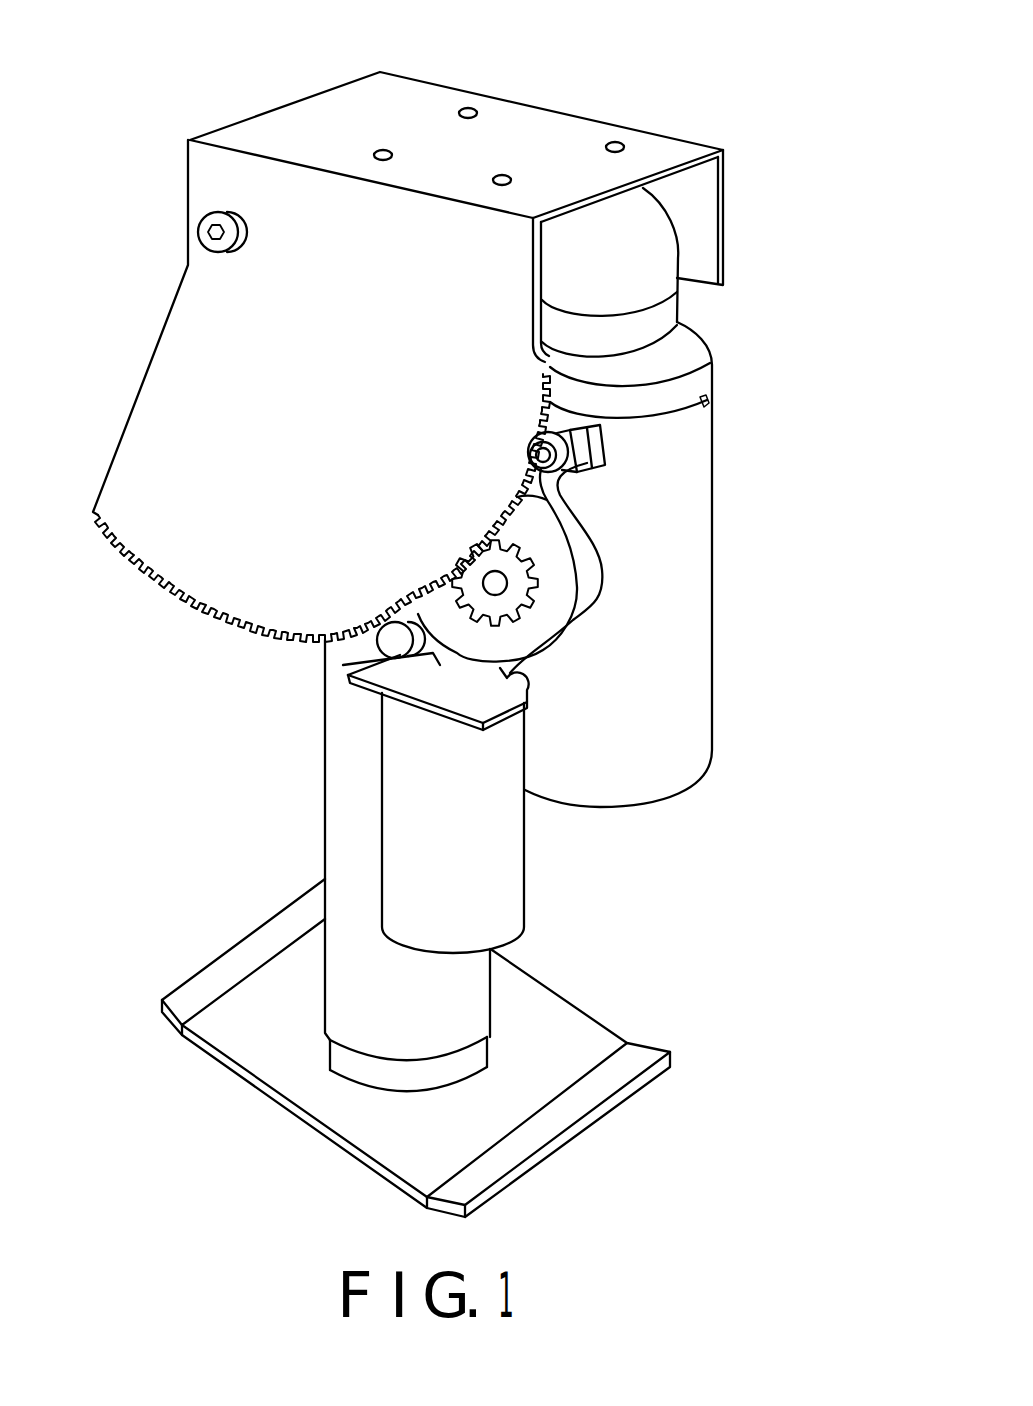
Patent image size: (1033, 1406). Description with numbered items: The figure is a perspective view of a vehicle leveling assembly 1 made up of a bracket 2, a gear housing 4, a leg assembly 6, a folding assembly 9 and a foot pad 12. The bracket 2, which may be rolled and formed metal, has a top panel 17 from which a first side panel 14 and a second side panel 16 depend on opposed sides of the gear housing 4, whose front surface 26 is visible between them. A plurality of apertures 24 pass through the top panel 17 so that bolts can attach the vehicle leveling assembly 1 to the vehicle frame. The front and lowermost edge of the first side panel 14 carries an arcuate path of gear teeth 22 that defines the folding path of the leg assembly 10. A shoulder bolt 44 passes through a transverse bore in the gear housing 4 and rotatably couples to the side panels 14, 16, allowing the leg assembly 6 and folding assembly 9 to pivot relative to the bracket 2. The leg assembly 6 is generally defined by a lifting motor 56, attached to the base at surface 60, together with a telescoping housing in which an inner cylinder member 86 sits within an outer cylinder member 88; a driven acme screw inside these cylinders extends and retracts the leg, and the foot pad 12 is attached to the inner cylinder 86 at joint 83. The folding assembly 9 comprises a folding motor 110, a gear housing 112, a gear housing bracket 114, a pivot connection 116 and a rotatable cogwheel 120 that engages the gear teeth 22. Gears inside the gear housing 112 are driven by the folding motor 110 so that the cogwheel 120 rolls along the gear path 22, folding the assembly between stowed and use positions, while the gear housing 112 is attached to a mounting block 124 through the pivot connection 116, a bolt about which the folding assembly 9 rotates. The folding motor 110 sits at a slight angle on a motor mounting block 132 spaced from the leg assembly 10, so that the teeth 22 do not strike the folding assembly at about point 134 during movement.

The vehicle leveling assembly 1 is at (876, 168).
The bracket 2 is at (588, 68).
The gear housing 4 is at (645, 253).
The leg assembly 6 is at (214, 771).
The folding assembly 9 is at (566, 829).
The leg assembly 10 is at (287, 880).
The foot pad 12 is at (597, 1017).
The first side panel 14 is at (176, 348).
The second side panel 16 is at (727, 178).
The top panel 17 is at (318, 115).
The path of gear teeth 22 is at (160, 585).
The apertures 24 is at (388, 151).
The front surface 26 is at (655, 318).
The shoulder bolt 44 is at (203, 226).
The lifting motor 56 is at (702, 572).
The surface 60 is at (704, 404).
The joint 83 is at (447, 1090).
The inner cylinder member 86 is at (473, 1057).
The outer cylinder member 88 is at (343, 800).
The folding motor 110 is at (500, 903).
The gear housing 112 is at (557, 607).
The gear housing bracket 114 is at (374, 654).
The pivot connection 116 is at (570, 470).
The cogwheel 120 is at (517, 582).
The mounting block 124 is at (602, 435).
The motor mounting block 132 is at (528, 693).
The point 134 is at (432, 660).